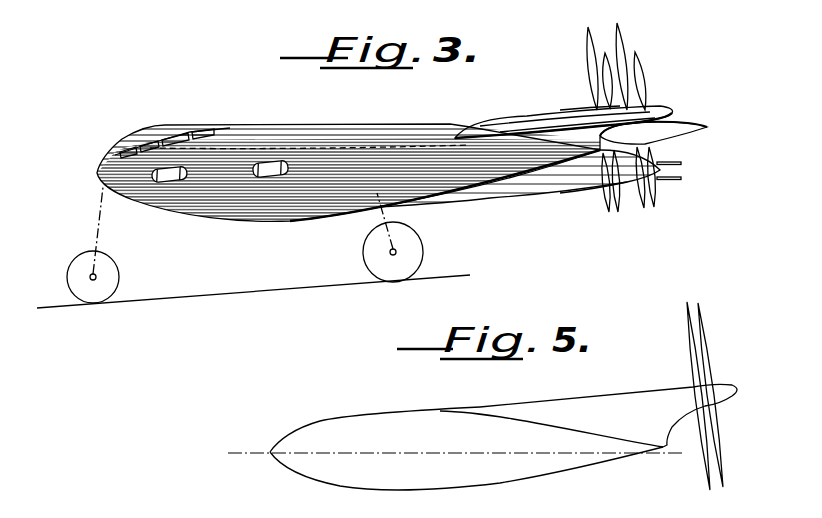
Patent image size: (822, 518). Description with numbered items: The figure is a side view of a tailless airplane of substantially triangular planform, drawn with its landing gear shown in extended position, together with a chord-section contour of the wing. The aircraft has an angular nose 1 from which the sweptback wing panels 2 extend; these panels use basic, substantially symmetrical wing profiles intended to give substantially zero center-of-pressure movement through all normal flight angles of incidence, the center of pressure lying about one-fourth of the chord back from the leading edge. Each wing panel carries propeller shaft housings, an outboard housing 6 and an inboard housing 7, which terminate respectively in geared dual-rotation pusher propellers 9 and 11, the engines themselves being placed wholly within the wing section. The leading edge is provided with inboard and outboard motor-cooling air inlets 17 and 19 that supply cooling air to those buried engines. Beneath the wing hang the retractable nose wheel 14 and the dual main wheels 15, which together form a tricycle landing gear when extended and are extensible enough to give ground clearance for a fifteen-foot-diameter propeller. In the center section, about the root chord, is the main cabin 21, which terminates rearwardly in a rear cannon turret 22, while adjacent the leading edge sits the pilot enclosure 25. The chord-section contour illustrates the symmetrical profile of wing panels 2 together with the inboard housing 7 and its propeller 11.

In FIG. 3, the angular nose 1 is at (92, 168).
In FIG. 3, the sweptback wing panels 2 is at (517, 181).
In FIG. 5, the sweptback wing panels 2 is at (348, 416).
In FIG. 3, the outboard housing 6 is at (577, 110).
In FIG. 3, the inboard housing 7 is at (527, 116).
In FIG. 5, the inboard housing 7 is at (622, 397).
In FIG. 3, the pusher propeller 9 is at (651, 200).
In FIG. 3, the pusher propeller 11 is at (612, 204).
In FIG. 5, the pusher propeller 11 is at (694, 304).
In FIG. 3, the retractable nose wheel 14 is at (112, 303).
In FIG. 3, the dual main wheels 15 is at (424, 251).
In FIG. 3, the inboard motor-cooling air inlet 17 is at (176, 181).
In FIG. 3, the outboard motor-cooling air inlet 19 is at (267, 177).
In FIG. 3, the main cabin 21 is at (424, 134).
In FIG. 3, the rear cannon turret 22 is at (588, 197).
In FIG. 3, the pilot enclosure 25 is at (147, 128).